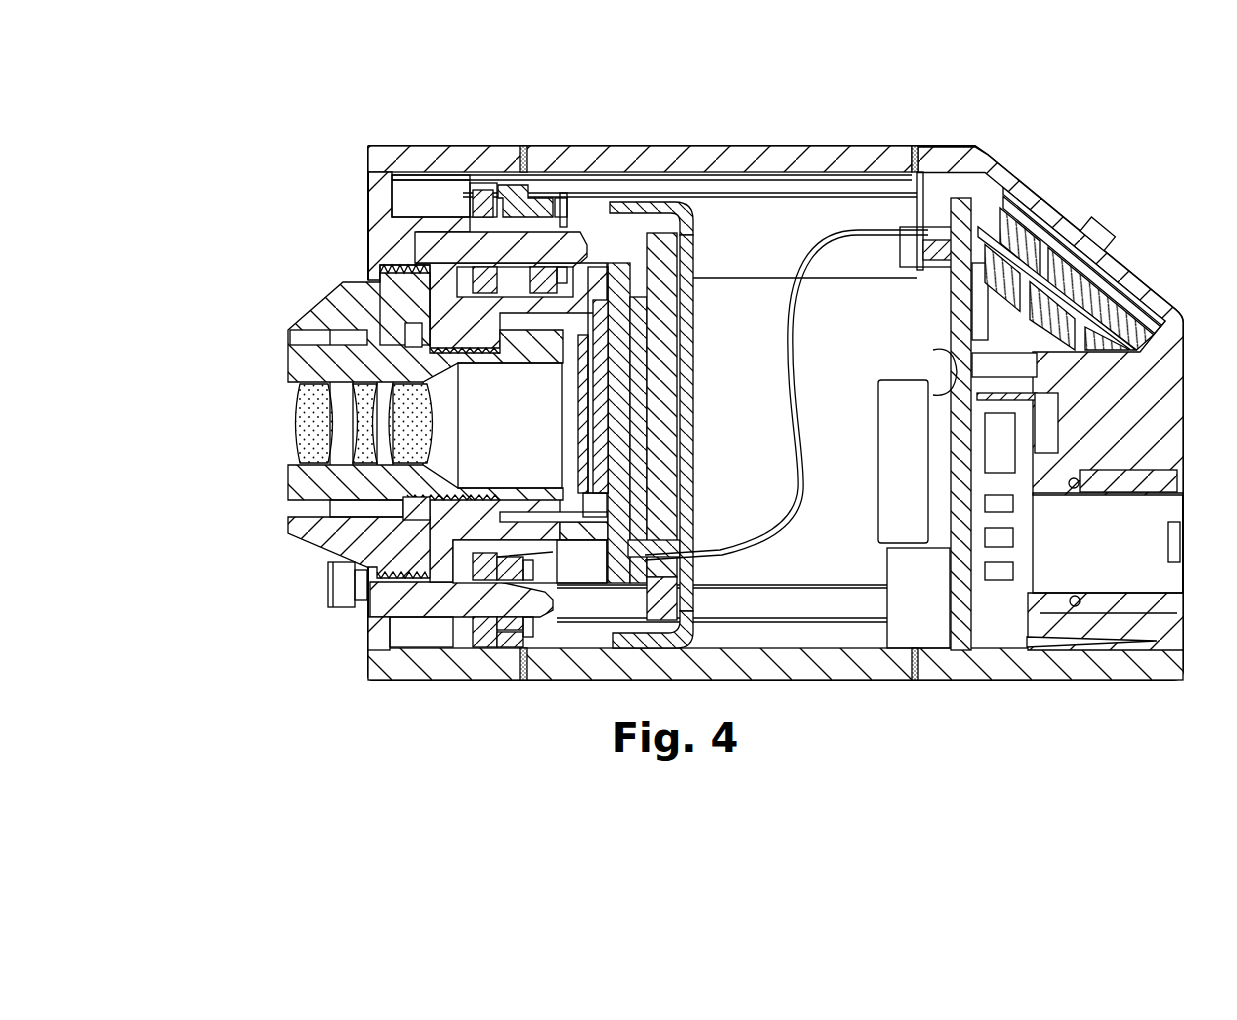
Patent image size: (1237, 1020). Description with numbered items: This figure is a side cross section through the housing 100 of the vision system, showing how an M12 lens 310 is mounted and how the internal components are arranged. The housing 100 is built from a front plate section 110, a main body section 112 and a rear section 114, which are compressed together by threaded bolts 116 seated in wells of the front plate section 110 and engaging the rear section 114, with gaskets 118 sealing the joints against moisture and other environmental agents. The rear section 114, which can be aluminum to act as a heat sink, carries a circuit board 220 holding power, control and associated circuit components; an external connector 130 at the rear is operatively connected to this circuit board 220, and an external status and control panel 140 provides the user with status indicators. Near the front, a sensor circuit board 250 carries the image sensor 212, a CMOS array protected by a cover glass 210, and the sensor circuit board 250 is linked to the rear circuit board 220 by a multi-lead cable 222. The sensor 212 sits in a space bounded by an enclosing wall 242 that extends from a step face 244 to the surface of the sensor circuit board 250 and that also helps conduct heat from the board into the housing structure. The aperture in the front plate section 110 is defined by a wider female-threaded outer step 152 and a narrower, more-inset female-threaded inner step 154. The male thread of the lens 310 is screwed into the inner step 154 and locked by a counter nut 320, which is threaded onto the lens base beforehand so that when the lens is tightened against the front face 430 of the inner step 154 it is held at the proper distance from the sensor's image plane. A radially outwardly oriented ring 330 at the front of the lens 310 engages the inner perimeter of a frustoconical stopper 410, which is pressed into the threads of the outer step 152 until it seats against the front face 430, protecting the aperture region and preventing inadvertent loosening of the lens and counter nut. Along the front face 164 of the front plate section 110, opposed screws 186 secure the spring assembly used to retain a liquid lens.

The housing 100 is at (684, 142).
The front plate section 110 is at (474, 150).
The main body section 112 is at (769, 163).
The rear section 114 is at (988, 170).
The threaded bolts 116 is at (800, 210).
The gaskets 118 is at (524, 676).
The external connector 130 is at (1180, 502).
The external status and control panel 140 is at (1064, 214).
The outer step 152 is at (418, 330).
The inner step 154 is at (453, 337).
The front face 164 is at (364, 253).
The screws 186 is at (342, 597).
The cover glass 210 is at (582, 400).
The image sensor 212 is at (603, 428).
The circuit board 220 is at (967, 220).
The multi-lead cable 222 is at (787, 340).
The enclosing wall 242 is at (593, 305).
The step face 244 is at (508, 334).
The sensor circuit board 250 is at (537, 237).
The M12 lens 310 is at (376, 299).
The counter nut 320 is at (394, 258).
The ring 330 is at (290, 330).
The stopper 410 is at (310, 533).
The front face of the inner step 430 is at (423, 534).